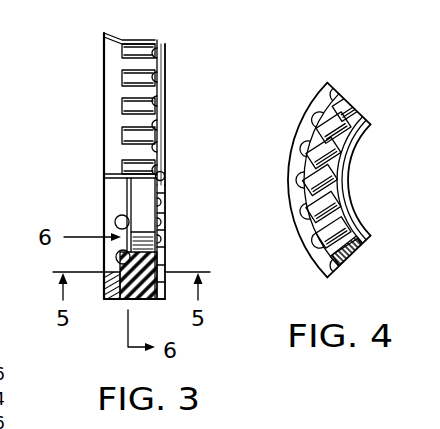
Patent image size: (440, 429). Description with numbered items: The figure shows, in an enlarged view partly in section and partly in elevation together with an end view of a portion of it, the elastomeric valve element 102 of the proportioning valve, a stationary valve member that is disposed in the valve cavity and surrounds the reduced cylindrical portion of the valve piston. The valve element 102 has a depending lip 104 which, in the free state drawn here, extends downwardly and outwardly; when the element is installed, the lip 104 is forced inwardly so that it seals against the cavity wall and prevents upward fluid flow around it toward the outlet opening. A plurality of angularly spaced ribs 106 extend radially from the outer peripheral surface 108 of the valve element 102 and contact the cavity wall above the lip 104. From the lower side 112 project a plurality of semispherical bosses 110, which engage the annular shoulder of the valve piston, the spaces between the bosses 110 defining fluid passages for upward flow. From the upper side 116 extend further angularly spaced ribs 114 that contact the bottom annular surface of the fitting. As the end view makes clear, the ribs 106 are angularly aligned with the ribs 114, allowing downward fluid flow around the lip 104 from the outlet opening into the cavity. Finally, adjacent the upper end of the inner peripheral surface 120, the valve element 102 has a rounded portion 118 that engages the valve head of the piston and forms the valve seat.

In FIG. 3, the valve element 102 is at (86, 93).
In FIG. 4, the valve element 102 is at (363, 89).
In FIG. 3, the depending lip 104 is at (108, 302).
In FIG. 4, the depending lip 104 is at (318, 101).
In FIG. 3, the ribs 106 is at (120, 105).
In FIG. 4, the ribs 106 is at (317, 248).
In FIG. 4, the outer peripheral surface 108 is at (312, 233).
In FIG. 3, the semispherical bosses 110 is at (117, 217).
In FIG. 3, the lower side 112 is at (125, 178).
In FIG. 3, the ribs 114 is at (164, 173).
In FIG. 4, the ribs 114 is at (331, 150).
In FIG. 3, the upper side 116 is at (165, 225).
In FIG. 4, the rounded portion 118 is at (360, 226).
In FIG. 4, the inner peripheral surface 120 is at (348, 195).